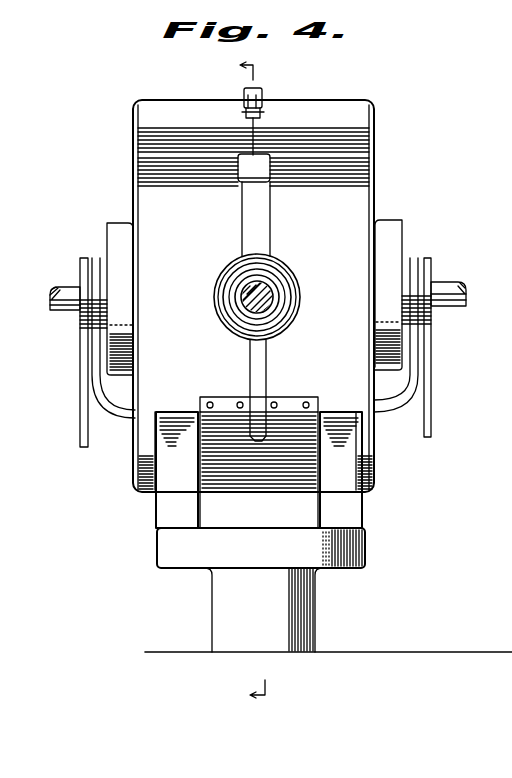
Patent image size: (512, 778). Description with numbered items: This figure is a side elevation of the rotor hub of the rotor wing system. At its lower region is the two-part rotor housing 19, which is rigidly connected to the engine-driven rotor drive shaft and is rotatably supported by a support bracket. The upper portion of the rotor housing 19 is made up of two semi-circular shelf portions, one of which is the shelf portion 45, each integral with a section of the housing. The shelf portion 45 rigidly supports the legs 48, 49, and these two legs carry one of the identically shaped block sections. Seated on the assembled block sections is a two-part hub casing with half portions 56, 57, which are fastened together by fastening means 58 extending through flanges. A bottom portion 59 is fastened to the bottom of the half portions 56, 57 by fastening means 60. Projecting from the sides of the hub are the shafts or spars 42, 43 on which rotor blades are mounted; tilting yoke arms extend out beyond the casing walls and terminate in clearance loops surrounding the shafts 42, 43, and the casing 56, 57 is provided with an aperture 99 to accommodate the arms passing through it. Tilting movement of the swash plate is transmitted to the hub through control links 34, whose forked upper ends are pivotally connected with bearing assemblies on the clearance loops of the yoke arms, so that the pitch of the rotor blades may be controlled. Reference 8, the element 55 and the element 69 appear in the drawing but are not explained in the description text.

The section line 8- 8 is at (263, 378).
The rotor housing 19 is at (355, 548).
The control links 34 is at (86, 426).
The shaft or spar 42 is at (64, 293).
The shaft or spar 43 is at (447, 288).
The semi-circular shelf portion 45 is at (262, 294).
The leg 48 is at (172, 517).
The leg 49 is at (350, 505).
The pendulum bar 55 is at (266, 377).
The hub casing half portion 56 is at (253, 296).
The hub casing half portion 57 is at (321, 296).
The fastening means 58 is at (263, 92).
The bottom portion 59 is at (263, 478).
The fastening means 60 is at (238, 402).
The bracket 69 is at (122, 418).
The aperture 99 is at (262, 170).